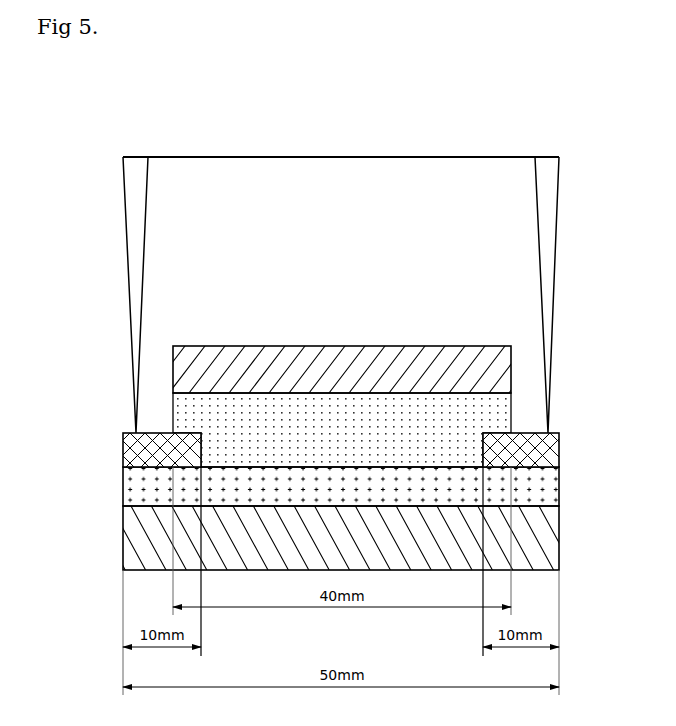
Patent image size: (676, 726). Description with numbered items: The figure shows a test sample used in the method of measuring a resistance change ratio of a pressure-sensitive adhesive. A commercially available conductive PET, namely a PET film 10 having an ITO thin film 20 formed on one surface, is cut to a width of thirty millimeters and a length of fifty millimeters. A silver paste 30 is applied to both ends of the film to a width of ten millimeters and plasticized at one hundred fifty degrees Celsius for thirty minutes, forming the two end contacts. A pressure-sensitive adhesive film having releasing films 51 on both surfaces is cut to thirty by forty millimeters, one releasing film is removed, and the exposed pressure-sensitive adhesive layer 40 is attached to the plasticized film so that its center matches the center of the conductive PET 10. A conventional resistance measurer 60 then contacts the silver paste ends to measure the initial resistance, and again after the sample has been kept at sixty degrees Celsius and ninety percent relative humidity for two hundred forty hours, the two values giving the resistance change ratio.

The PET film 10 is at (130, 530).
The ITO thin film 20 is at (130, 481).
The silver paste 30 is at (130, 445).
The pressure sensitive adhesive layer 40 is at (183, 411).
The releasing film 51 is at (195, 355).
The resistance measurer 60 is at (340, 157).